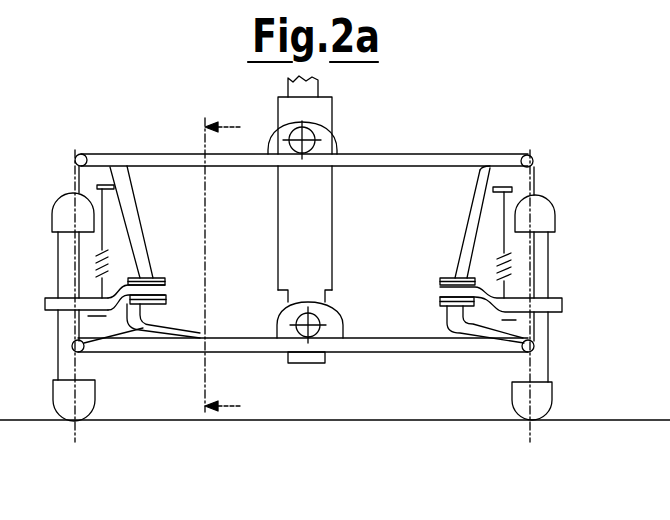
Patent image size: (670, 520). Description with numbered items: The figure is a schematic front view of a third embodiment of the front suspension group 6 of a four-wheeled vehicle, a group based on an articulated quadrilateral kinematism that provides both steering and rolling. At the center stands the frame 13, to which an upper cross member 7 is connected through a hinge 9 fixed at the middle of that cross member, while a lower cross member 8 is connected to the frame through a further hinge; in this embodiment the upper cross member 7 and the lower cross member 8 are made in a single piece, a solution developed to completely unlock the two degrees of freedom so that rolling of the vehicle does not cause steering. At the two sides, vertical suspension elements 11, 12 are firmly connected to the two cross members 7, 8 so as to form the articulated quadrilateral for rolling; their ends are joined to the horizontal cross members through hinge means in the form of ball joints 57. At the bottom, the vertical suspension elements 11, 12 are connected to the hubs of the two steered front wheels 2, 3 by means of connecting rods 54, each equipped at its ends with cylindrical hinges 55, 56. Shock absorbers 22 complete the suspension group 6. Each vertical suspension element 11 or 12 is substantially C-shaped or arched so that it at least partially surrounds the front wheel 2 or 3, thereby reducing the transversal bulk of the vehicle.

The steered front wheel 2 is at (84, 403).
The steered front wheel 3 is at (526, 404).
The front suspension group 6 is at (363, 372).
The upper cross member 7 is at (421, 160).
The lower cross member 8 is at (394, 340).
The hinge 9 is at (312, 134).
The vertical suspension element 11 is at (140, 250).
The vertical suspension element 12 is at (467, 228).
The frame 13 is at (315, 232).
The shock absorber 22 is at (103, 228).
The connecting rod 54 is at (100, 302).
The cylindrical hinge 55 is at (55, 312).
The cylindrical hinge 56 is at (163, 293).
The ball joint 57 is at (84, 155).